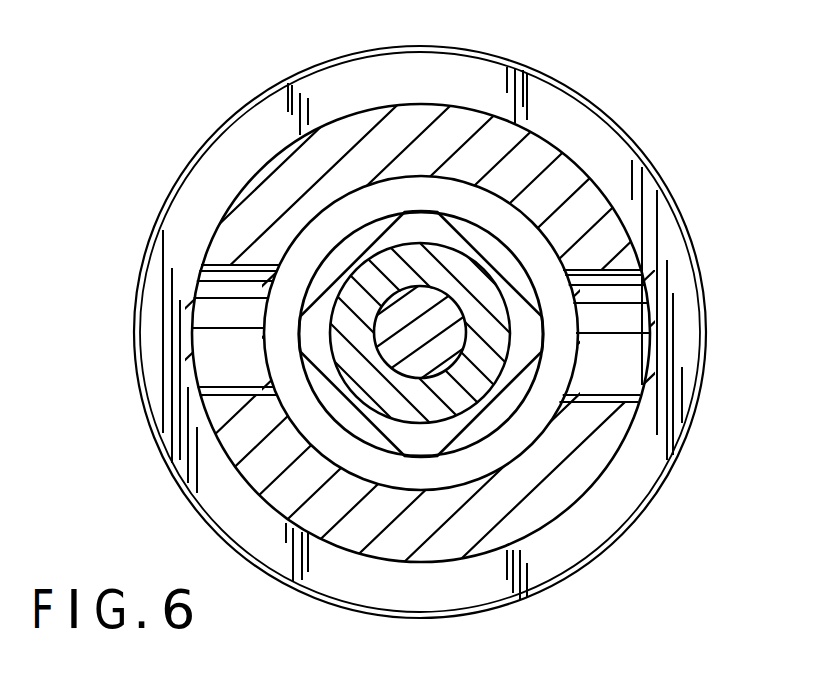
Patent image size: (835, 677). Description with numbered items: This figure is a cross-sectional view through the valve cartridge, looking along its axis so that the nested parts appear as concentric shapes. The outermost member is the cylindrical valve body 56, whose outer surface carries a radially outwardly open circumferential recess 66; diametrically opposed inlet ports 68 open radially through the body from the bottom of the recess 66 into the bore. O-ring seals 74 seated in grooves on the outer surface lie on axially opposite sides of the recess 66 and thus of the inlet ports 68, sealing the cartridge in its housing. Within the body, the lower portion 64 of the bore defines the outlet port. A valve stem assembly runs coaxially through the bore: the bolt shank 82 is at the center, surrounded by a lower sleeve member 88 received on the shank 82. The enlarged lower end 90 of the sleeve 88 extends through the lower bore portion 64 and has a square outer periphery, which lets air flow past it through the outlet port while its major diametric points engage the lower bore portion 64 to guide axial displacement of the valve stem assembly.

The valve body 56 is at (568, 483).
The lower portion of the bore 64 is at (299, 233).
The circumferential recess 66 is at (622, 230).
The inlet ports 68 is at (202, 320).
The O-ring seals 74 is at (683, 437).
The shank 82 is at (443, 313).
The lower sleeve member 88 is at (443, 263).
The enlarged lower end of sleeve 90 is at (413, 230).